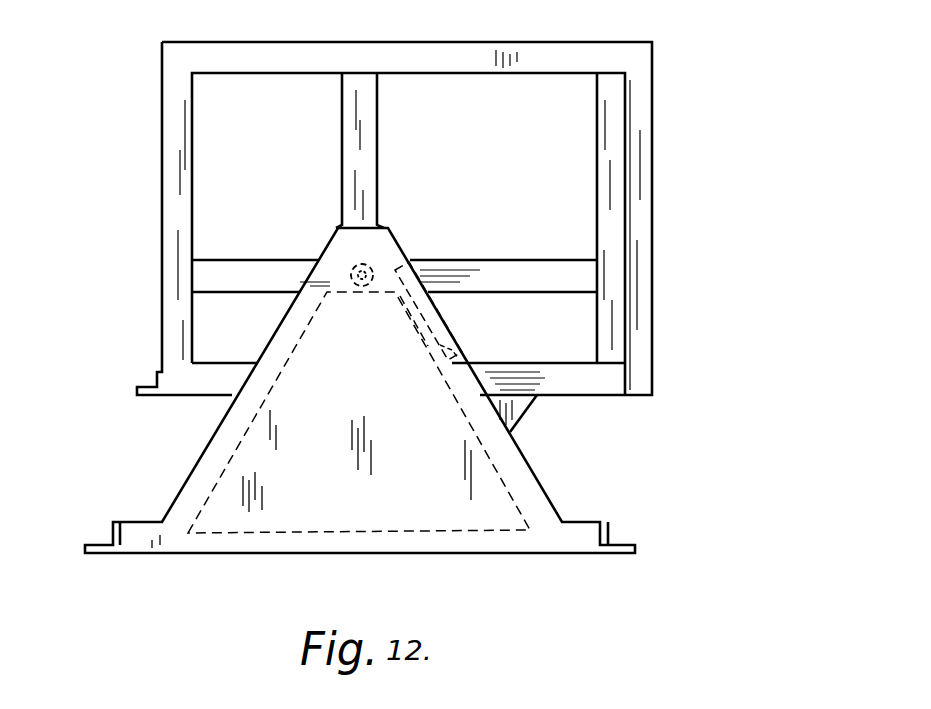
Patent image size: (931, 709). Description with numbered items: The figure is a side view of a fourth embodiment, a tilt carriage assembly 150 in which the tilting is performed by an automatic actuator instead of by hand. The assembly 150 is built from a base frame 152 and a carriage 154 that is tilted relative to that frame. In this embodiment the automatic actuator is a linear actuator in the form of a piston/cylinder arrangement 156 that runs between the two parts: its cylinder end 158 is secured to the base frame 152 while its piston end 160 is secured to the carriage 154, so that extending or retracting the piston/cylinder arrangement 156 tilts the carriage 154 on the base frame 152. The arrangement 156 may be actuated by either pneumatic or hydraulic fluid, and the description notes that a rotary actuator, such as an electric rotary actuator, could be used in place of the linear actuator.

The tilt carriage assembly 150 is at (124, 130).
The base frame 152 is at (532, 485).
The carriage 154 is at (648, 132).
The piston/cylinder arrangement 156 is at (419, 346).
The cylinder end 158 is at (473, 353).
The piston end 160 is at (376, 268).